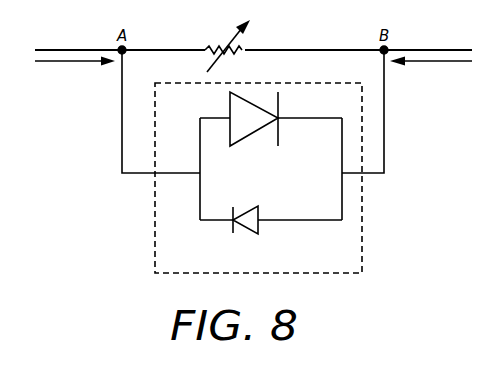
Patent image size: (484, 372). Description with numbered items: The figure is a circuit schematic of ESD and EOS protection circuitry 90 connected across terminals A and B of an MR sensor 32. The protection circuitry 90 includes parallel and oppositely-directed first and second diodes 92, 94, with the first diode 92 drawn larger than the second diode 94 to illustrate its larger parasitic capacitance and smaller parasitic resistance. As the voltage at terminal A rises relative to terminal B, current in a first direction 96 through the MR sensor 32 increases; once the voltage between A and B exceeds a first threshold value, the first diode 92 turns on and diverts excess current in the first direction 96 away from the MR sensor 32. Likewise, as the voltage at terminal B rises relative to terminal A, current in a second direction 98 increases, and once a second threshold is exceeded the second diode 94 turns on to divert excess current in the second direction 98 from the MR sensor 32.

The MR sensor 32 is at (241, 46).
The ESD and EOS protection circuitry 90 is at (155, 243).
The first diode 92 is at (241, 141).
The second diode 94 is at (258, 217).
The first direction 96 is at (73, 74).
The second direction 98 is at (431, 74).